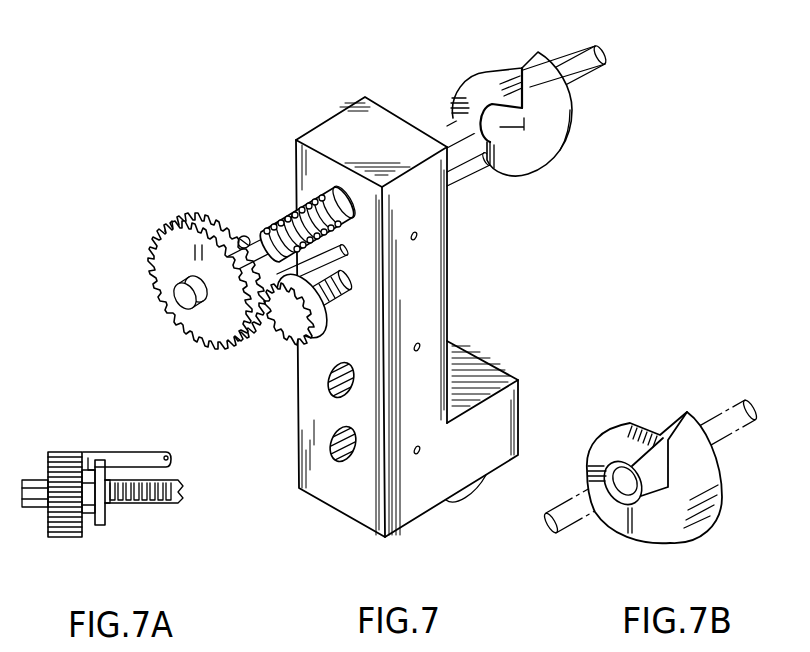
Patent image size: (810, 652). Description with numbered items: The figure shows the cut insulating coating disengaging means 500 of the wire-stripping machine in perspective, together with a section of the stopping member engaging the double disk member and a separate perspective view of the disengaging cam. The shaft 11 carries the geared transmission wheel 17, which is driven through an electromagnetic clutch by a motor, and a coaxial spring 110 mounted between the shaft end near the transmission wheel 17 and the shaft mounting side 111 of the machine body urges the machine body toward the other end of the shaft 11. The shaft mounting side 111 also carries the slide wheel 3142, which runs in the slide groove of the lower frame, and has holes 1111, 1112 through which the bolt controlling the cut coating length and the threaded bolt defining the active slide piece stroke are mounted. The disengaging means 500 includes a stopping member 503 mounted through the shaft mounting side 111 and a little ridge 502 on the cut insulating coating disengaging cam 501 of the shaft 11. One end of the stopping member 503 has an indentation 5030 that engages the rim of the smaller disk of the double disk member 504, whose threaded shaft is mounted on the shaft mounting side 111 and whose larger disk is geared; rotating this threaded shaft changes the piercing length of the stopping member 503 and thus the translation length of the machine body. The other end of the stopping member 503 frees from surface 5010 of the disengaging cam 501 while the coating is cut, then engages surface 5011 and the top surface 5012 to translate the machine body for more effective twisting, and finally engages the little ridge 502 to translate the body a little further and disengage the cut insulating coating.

In FIG. 7, the shaft 11 is at (256, 241).
In FIG. 7, the geared transmission wheel 17 is at (171, 230).
In FIG. 7, the coaxial spring 110 is at (294, 206).
In FIG. 7, the shaft mounting side 111 is at (433, 282).
In FIG. 7, the hole 1111 is at (342, 460).
In FIG. 7, the hole 1112 is at (343, 388).
In FIG. 7, the slide wheel 3142 is at (467, 497).
In FIG. 7, the cut insulating coating disengaging means 500 is at (545, 128).
In FIG. 7, the cut insulating coating disengaging cam 501 is at (545, 111).
In FIG. 7B, the cut insulating coating disengaging cam 501 is at (663, 468).
In FIG. 7, the little ridge 502 is at (567, 141).
In FIG. 7B, the little ridge 502 is at (673, 530).
In FIG. 7, the stopping member 503 is at (466, 172).
In FIG. 7A, the stopping member 503 is at (143, 452).
In FIG. 7, the double disk member 504 is at (319, 320).
In FIG. 7A, the double disk member 504 is at (90, 528).
In FIG. 7, the surface 5010 is at (523, 76).
In FIG. 7B, the surface 5010 is at (668, 437).
In FIG. 7, the surface 5011 is at (517, 102).
In FIG. 7B, the surface 5011 is at (597, 455).
In FIG. 7, the top surface 5012 is at (512, 165).
In FIG. 7B, the top surface 5012 is at (650, 530).
In FIG. 7A, the indentation 5030 is at (93, 460).